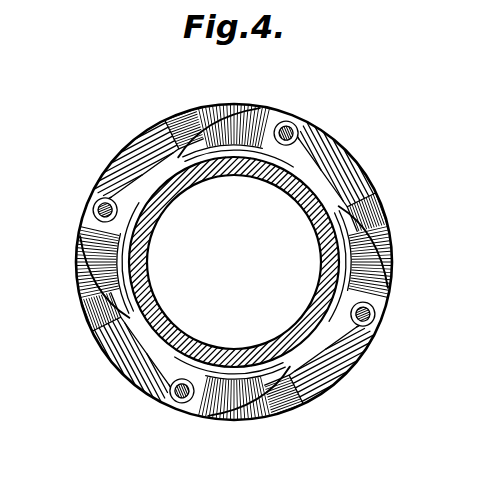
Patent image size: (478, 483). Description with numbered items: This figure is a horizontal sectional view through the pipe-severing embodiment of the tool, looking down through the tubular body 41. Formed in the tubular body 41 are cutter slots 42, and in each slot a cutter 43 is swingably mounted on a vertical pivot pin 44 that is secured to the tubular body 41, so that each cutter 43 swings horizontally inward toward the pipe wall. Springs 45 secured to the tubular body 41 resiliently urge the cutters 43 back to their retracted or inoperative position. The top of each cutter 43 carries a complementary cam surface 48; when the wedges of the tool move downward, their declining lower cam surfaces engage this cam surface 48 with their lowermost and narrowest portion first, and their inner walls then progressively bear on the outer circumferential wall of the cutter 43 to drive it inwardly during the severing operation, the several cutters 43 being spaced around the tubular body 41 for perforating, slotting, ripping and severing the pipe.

The tubular body 41 is at (337, 158).
The cutter slots 42 is at (177, 118).
The cutters 43 is at (222, 137).
The vertical pivot pins 44 is at (286, 128).
The springs 45 is at (197, 350).
The cam surface 48 is at (255, 117).